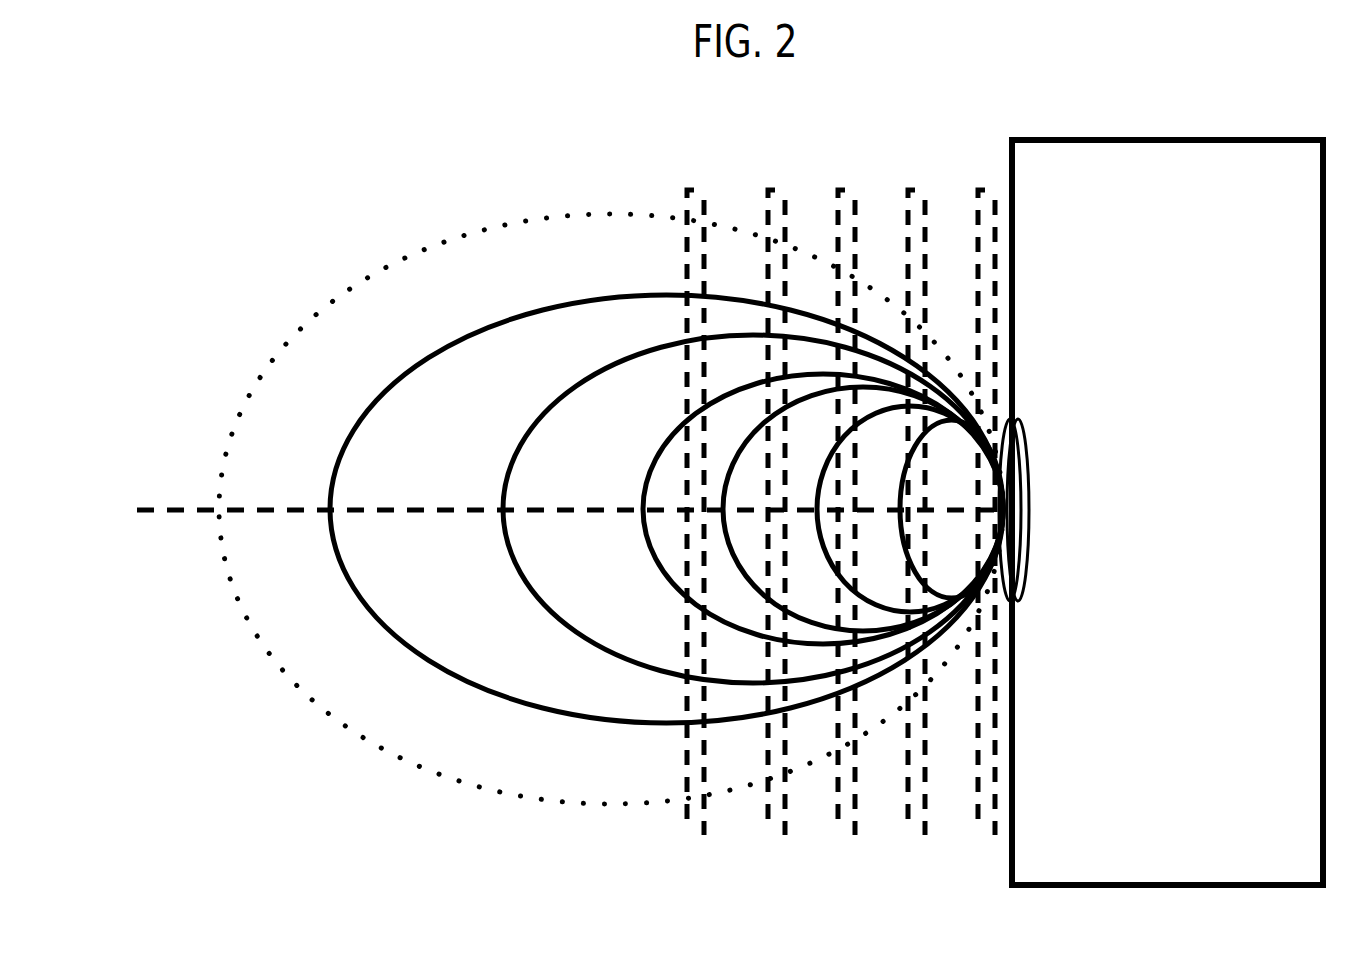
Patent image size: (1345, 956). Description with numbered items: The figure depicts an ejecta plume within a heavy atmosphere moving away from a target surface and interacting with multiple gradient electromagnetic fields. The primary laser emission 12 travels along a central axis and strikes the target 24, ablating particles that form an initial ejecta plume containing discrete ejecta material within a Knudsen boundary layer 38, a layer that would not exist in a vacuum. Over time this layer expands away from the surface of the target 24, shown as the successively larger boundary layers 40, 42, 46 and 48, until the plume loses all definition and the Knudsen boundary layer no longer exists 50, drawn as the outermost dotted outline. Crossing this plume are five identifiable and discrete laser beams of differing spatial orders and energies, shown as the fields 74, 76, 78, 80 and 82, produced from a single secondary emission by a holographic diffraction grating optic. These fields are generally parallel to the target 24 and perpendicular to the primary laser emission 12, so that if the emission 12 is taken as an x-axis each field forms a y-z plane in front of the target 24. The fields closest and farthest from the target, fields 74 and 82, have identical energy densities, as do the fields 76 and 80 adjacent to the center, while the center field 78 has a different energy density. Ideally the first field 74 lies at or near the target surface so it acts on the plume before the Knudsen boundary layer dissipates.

The primary laser emission 12 is at (183, 510).
The target 24 is at (1167, 512).
The Knudsen boundary layer 38 is at (993, 518).
The boundary layer 40 is at (748, 578).
The boundary layer 42 is at (673, 585).
The boundary layer 46 is at (548, 605).
The boundary layer 48 is at (347, 580).
The dissipated Knudsen boundary layer 50 is at (243, 595).
The first electromagnetic field 74 is at (985, 217).
The electromagnetic field 76 is at (917, 217).
The center electromagnetic field 78 is at (847, 217).
The electromagnetic field 80 is at (773, 217).
The electromagnetic field 82 is at (693, 242).